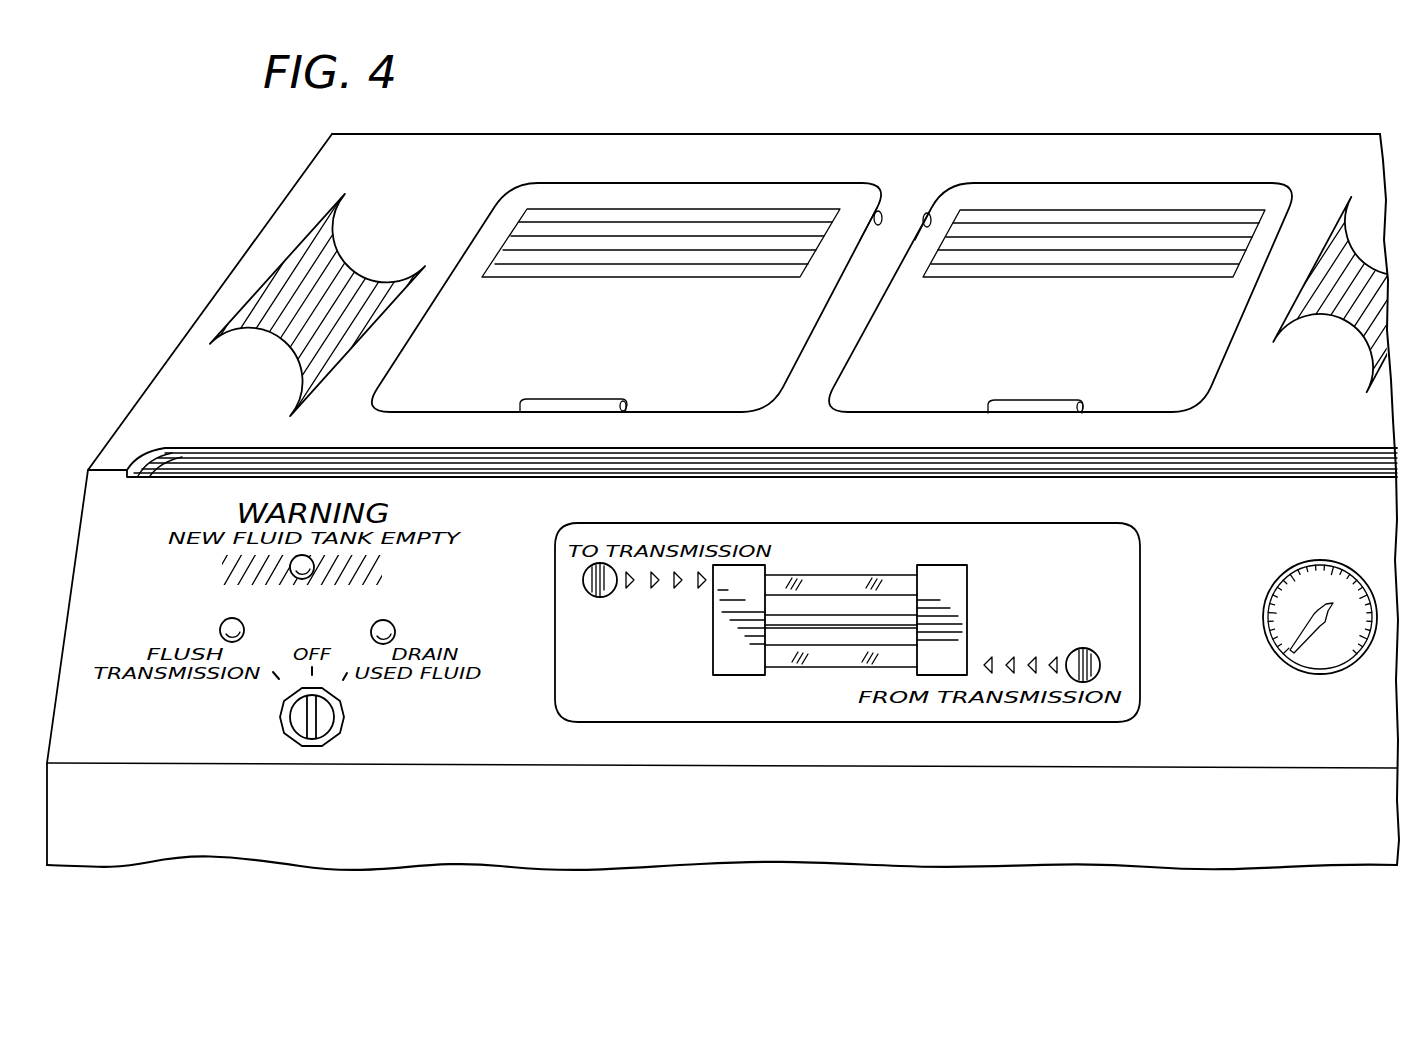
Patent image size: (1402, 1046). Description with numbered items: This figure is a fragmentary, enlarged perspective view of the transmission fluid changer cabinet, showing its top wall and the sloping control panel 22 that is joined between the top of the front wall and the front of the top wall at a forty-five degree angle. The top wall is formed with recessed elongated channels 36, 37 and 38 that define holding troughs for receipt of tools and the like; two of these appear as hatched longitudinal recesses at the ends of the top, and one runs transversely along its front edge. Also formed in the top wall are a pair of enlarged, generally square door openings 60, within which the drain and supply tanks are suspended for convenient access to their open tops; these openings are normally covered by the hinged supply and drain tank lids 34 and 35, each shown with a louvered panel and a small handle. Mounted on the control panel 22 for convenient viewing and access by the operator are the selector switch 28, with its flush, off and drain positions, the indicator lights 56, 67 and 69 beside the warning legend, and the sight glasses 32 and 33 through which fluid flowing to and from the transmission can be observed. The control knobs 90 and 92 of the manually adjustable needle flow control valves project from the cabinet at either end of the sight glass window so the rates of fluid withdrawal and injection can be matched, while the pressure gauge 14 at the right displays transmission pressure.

The pressure gauge 14 is at (1330, 562).
The control panel 22 is at (1182, 610).
The selector switch 28 is at (300, 720).
The sight glass 32 is at (862, 583).
The sight glass 33 is at (818, 658).
The supply tank lid 34 is at (733, 232).
The drain tank lid 35 is at (1057, 230).
The recessed channel 36 is at (288, 275).
The recessed channel 37 is at (193, 470).
The recessed channel 38 is at (1350, 232).
The indicator light 56 is at (305, 580).
The door opening 60 is at (929, 213).
The indicator light 67 is at (393, 624).
The indicator light 69 is at (222, 624).
The control knob 90 is at (598, 597).
The control knob 92 is at (1088, 648).